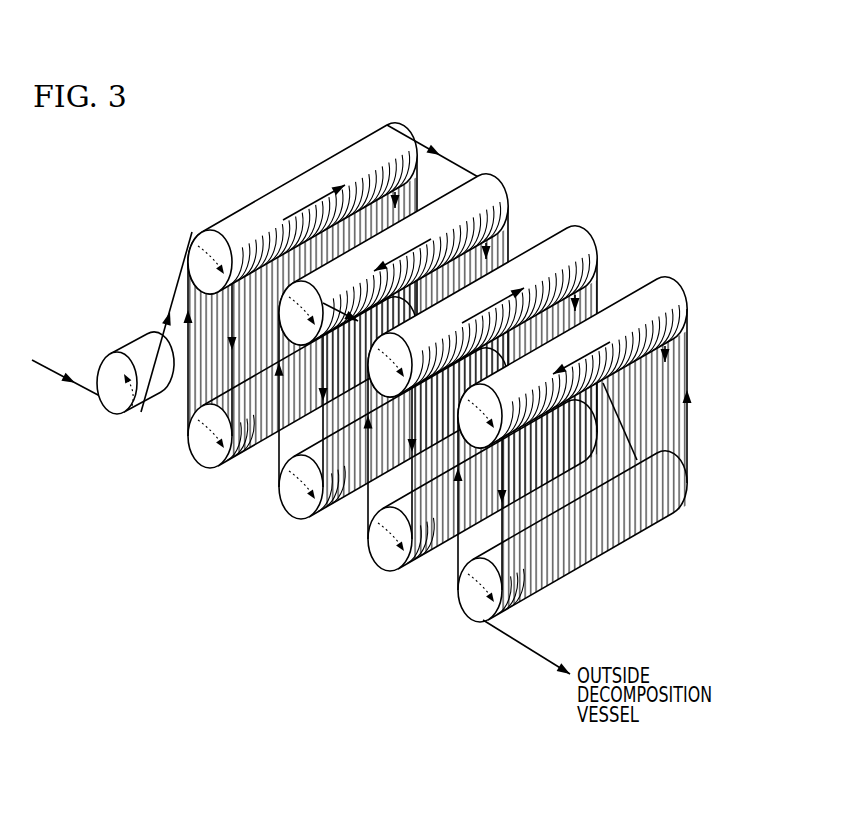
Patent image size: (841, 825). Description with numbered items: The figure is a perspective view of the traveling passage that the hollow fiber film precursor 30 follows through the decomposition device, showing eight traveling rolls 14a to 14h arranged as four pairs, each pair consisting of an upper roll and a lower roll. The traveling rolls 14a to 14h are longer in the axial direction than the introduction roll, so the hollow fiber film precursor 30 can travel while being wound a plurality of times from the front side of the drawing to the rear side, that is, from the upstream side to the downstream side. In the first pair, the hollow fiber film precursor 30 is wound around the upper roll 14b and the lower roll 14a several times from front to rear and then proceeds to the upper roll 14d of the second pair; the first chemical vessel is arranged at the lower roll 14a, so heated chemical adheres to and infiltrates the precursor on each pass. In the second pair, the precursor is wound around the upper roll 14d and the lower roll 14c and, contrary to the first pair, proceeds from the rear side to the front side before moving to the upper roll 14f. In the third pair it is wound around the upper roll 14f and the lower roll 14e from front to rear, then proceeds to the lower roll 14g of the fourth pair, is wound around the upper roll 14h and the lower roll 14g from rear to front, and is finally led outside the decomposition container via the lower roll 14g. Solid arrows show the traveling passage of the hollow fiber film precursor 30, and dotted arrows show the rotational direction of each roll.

The lower roll of the first pair of rolls 14a is at (197, 437).
The upper roll of the first pair of rolls 14b is at (195, 262).
The lower roll of the second pair of rolls 14c is at (287, 487).
The upper roll of the second pair of rolls 14d is at (487, 188).
The lower roll of the third pair of rolls 14e is at (373, 540).
The upper roll of the third pair of rolls 14f is at (578, 242).
The lower roll of the fourth pair of rolls 14g is at (458, 592).
The upper roll of the fourth pair of rolls 14h is at (672, 295).
The hollow fiber film precursor 30 is at (78, 393).